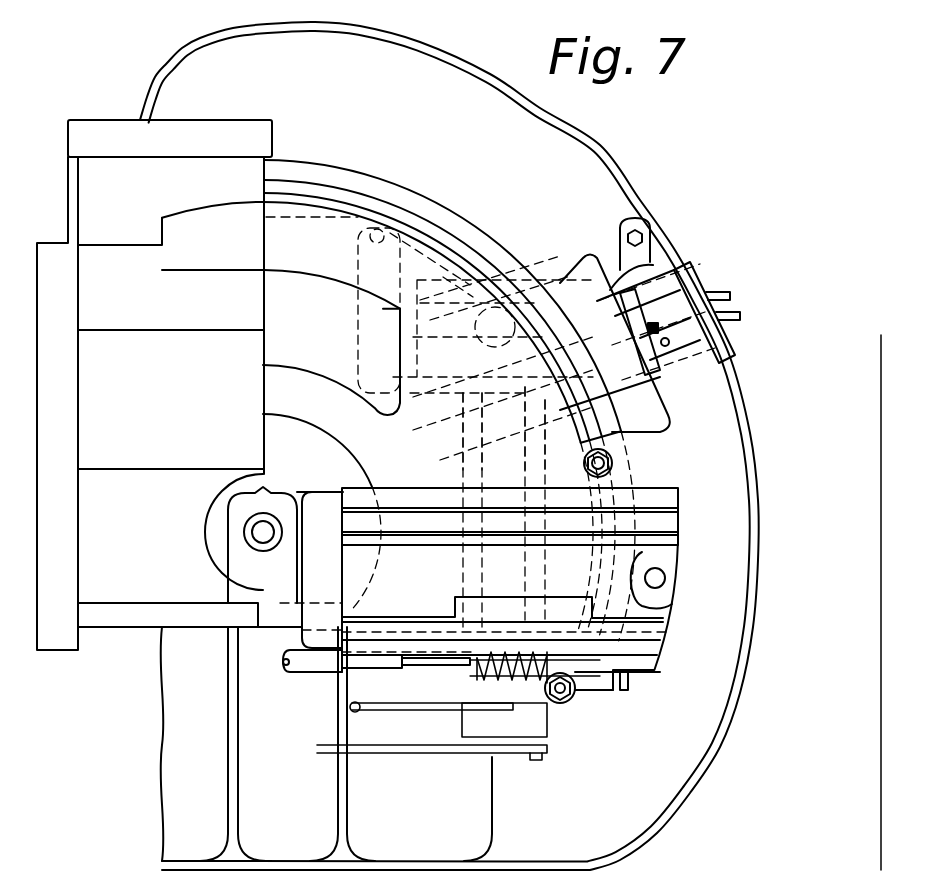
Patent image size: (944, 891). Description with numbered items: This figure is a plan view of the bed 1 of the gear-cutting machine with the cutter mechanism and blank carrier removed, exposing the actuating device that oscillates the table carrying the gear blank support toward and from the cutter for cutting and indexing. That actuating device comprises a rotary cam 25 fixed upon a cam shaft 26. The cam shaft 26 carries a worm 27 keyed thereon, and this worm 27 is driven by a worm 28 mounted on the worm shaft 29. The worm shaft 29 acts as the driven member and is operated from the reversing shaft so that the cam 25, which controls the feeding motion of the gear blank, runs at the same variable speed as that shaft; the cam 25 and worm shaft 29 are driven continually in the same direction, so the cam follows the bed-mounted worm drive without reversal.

The bed of the machine 1 is at (746, 536).
The rotary cam 25 is at (483, 277).
The cam shaft 26 is at (483, 565).
The worm 27 is at (598, 692).
The worm 28 is at (487, 682).
The worm shaft 29 is at (316, 668).